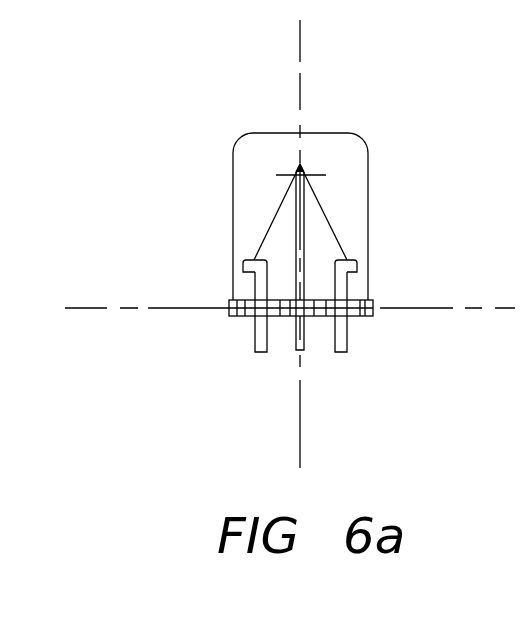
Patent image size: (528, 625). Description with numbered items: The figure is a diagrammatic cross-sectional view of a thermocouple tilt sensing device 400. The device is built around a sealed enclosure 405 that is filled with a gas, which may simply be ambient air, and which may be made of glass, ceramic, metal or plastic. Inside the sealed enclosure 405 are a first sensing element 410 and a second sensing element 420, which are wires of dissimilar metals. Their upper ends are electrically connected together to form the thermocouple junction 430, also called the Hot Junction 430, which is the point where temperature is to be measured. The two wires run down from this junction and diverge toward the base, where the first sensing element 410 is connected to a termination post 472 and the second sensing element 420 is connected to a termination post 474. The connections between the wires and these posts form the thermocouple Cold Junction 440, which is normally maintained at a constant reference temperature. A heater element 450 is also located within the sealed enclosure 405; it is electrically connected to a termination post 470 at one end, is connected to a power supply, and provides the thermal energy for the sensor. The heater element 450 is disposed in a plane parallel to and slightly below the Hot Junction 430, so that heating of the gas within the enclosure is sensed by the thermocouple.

The thermocouple tilt sensing device 400 is at (215, 108).
The sealed enclosure 405 is at (368, 168).
The first sensing element 410 is at (273, 213).
The second sensing element 420 is at (328, 211).
The thermocouple junction 430 is at (300, 165).
The Cold Junction 440 is at (250, 259).
The heater element 450 is at (277, 173).
The termination post 470 is at (305, 352).
The termination post 472 is at (257, 343).
The termination post 474 is at (345, 335).